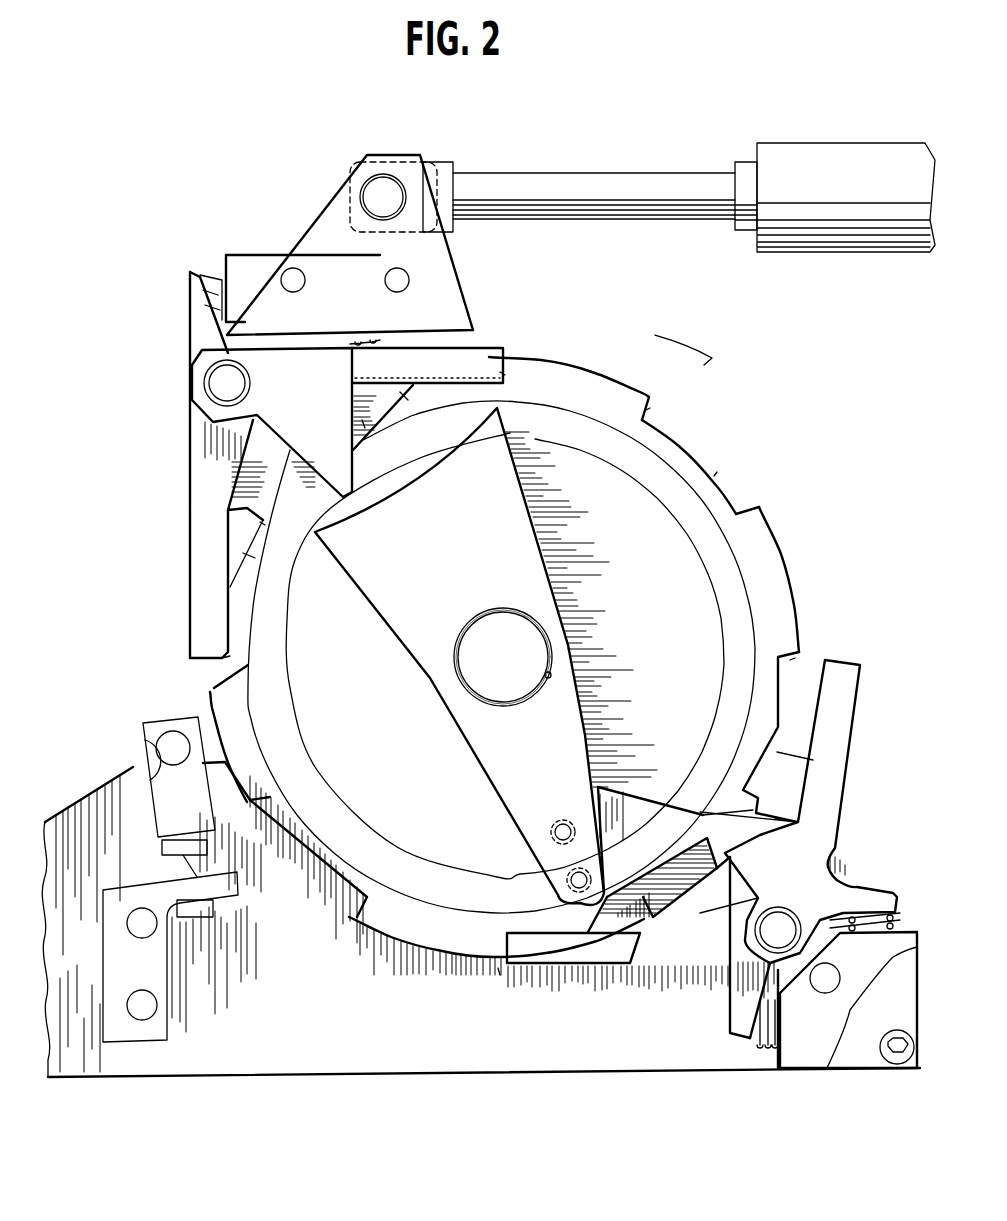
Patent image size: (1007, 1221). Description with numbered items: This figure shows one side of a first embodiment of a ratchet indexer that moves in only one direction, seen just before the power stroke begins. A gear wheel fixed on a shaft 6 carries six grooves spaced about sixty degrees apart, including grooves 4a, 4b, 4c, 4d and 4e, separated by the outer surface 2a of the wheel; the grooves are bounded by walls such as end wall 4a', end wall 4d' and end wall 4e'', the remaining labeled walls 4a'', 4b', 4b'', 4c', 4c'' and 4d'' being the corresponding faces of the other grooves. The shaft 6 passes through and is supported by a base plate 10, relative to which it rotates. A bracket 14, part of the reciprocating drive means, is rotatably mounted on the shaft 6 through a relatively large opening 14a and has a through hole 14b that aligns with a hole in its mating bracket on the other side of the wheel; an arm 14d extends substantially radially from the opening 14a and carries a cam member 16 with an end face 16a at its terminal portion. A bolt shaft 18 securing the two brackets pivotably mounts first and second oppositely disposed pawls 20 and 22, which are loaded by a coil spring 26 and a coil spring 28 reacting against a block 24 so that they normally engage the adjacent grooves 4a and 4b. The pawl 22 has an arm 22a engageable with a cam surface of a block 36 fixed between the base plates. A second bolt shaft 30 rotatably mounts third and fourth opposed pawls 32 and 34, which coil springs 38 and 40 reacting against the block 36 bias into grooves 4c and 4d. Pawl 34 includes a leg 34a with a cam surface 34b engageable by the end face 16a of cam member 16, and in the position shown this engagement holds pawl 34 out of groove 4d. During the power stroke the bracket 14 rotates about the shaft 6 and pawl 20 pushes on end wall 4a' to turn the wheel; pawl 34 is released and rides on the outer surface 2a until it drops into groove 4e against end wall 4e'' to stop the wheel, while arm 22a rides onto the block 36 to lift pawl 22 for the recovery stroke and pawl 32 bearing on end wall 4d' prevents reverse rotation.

The outer surface 2a is at (790, 560).
The groove 4a is at (420, 411).
The end wall 4a' is at (524, 383).
The cam surface end 4a'' is at (378, 438).
The groove 4b is at (271, 560).
The cam surface end 4b' is at (291, 513).
The cam surface end 4b'' is at (250, 648).
The groove 4c is at (609, 952).
The cam surface end 4c' is at (487, 993).
The cam surface end 4c'' is at (674, 906).
The groove 4d is at (806, 755).
The end wall 4d' is at (793, 836).
The cam surface end 4d'' is at (819, 642).
The groove 4e is at (734, 455).
The end wall 4e'' is at (674, 405).
The shaft 6 is at (470, 653).
The base plate 10 is at (330, 1065).
The bracket member 14 is at (445, 270).
The opening 14a is at (549, 680).
The through hole 14b is at (397, 185).
The arm 14d is at (510, 797).
The cam member 16 is at (640, 812).
The end face 16a is at (700, 815).
The shaft 18 is at (215, 383).
The first pawl 20 is at (495, 358).
The second pawl 22 is at (205, 555).
The arm 22a is at (215, 480).
The block 24 is at (262, 275).
The coil spring 26 is at (360, 342).
The coil spring 28 is at (210, 275).
The shaft 30 is at (790, 933).
The third pawl 32 is at (590, 960).
The fourth pawl 34 is at (835, 797).
The leg 34a is at (720, 805).
The cam surface 34b is at (722, 848).
The block 36 is at (820, 1058).
The coil spring 38 is at (762, 1053).
The coil spring 40 is at (897, 915).